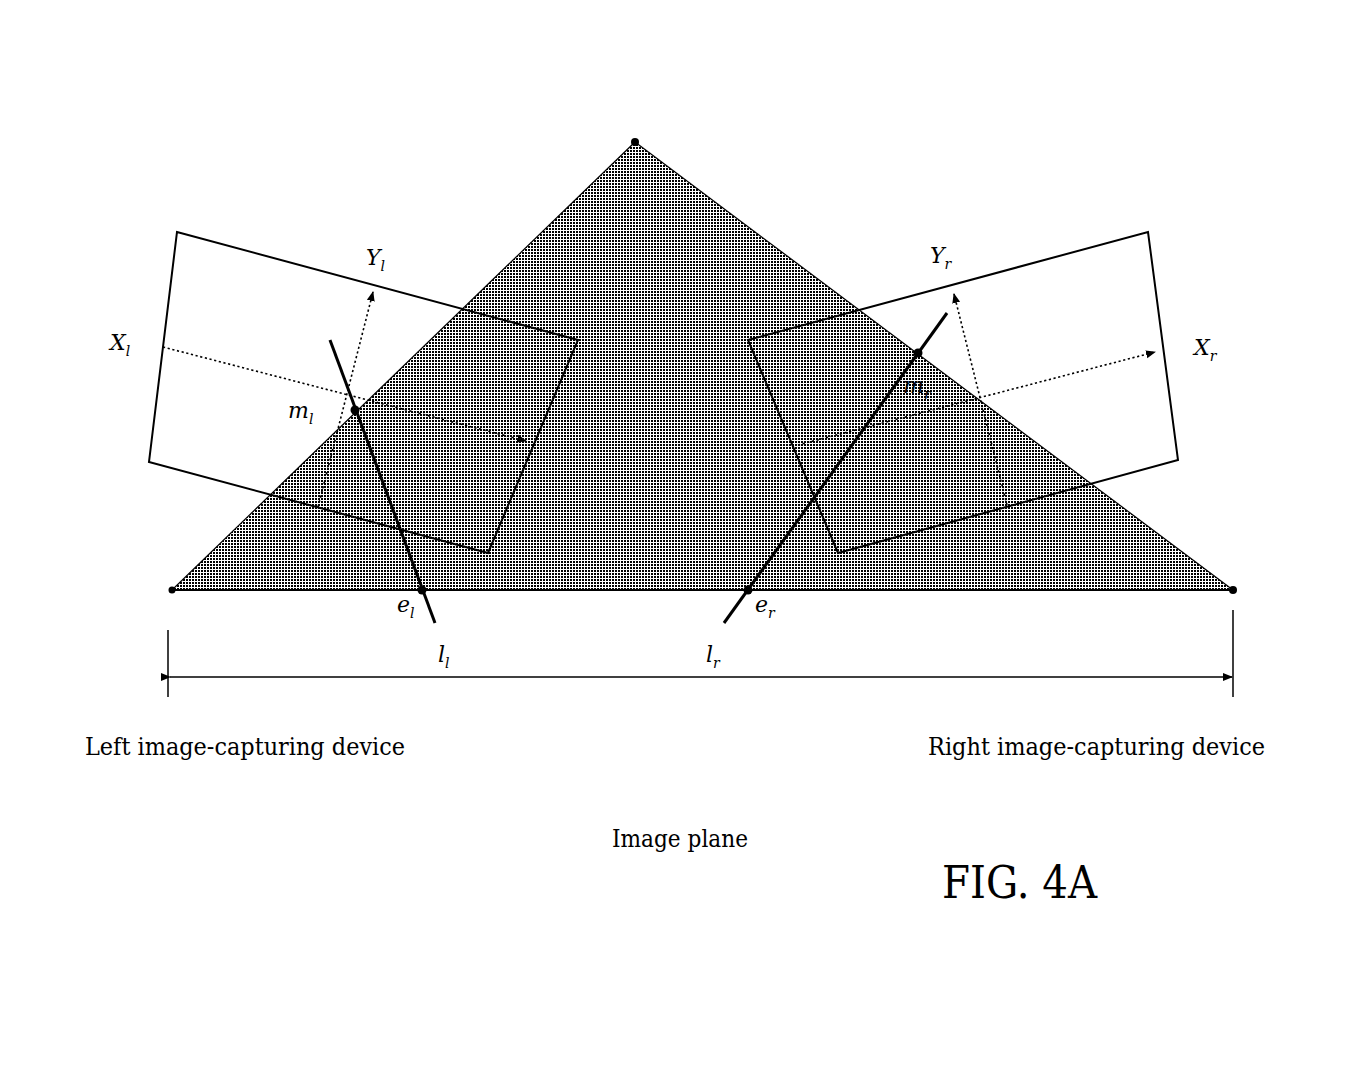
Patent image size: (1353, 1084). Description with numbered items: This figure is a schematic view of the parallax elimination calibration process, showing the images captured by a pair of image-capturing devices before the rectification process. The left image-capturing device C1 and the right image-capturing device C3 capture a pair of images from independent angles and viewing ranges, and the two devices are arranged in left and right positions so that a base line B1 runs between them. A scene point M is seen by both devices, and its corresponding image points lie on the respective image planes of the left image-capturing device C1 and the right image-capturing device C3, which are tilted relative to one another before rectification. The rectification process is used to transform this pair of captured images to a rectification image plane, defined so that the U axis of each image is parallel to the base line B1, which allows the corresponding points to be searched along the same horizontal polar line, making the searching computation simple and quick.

The object point M is at (702, 342).
The left image-capturing device C1 is at (133, 599).
The right image-capturing device C3 is at (1278, 598).
The base line B1 is at (700, 658).